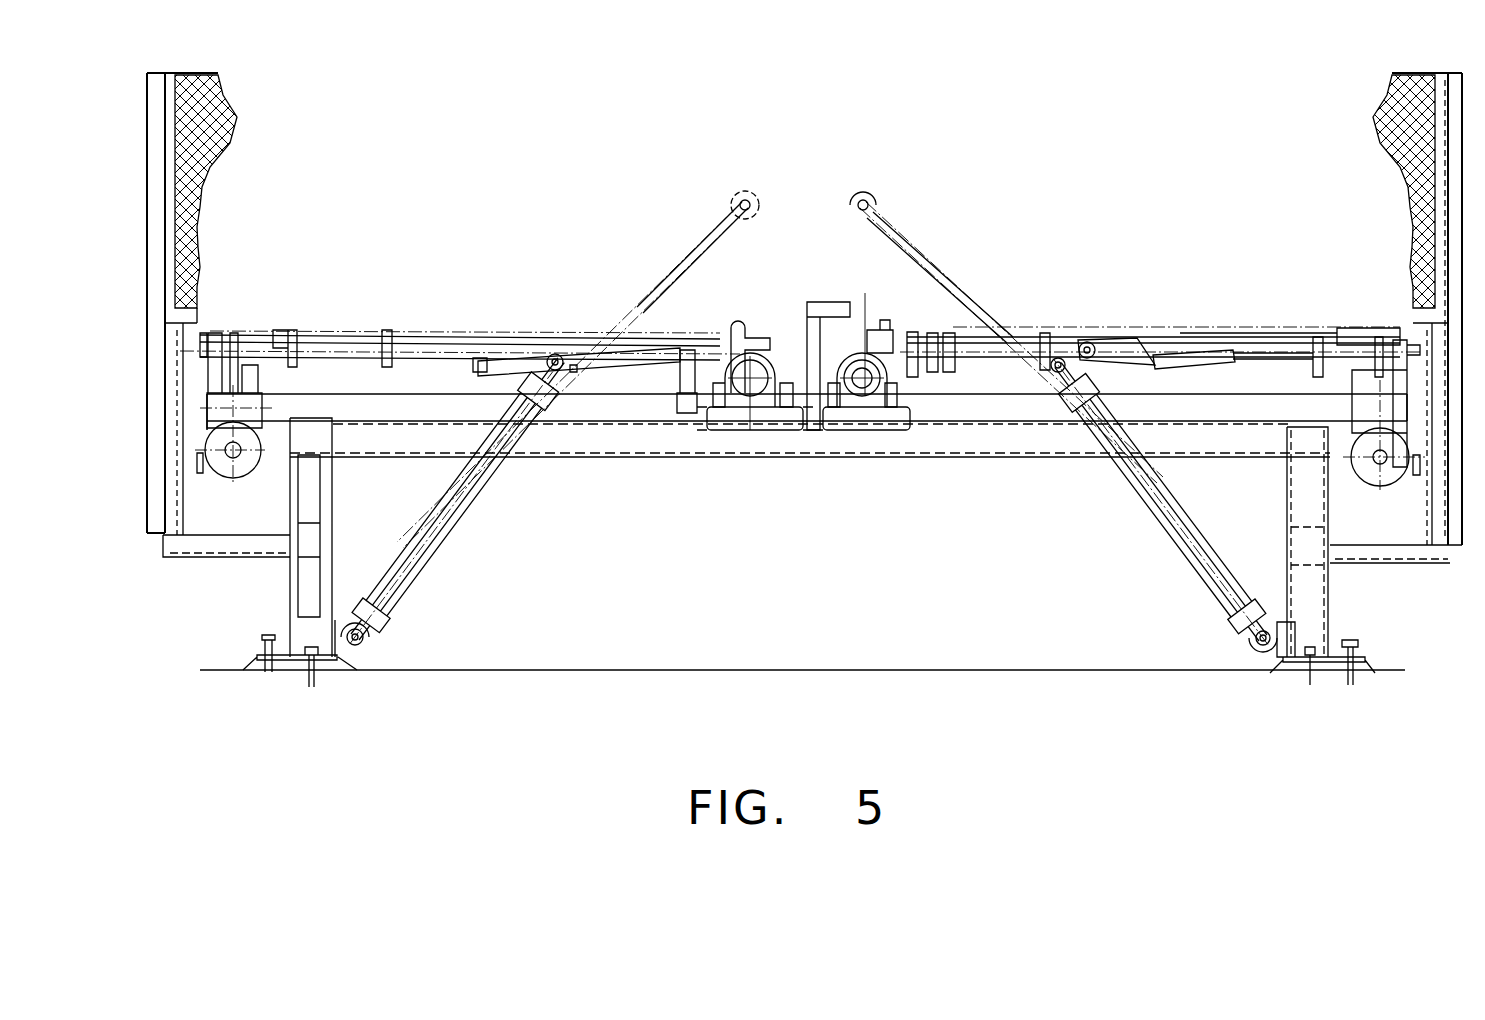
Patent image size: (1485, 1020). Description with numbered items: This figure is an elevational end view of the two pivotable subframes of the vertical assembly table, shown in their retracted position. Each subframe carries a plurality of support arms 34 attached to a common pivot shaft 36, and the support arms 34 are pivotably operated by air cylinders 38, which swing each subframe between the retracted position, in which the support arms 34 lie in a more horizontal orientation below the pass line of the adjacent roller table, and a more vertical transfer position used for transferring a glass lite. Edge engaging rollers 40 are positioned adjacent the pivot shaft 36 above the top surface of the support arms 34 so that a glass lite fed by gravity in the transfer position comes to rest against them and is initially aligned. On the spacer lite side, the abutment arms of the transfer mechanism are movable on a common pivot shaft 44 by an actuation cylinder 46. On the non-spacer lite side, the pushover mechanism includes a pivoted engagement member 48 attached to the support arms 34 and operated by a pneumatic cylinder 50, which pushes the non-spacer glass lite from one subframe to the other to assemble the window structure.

The support arms 34 is at (300, 337).
The pivot shaft 36 is at (748, 390).
The air cylinders 38 is at (433, 543).
The edge engaging rollers 40 is at (751, 342).
The pivot shaft 44 is at (742, 340).
The actuation cylinder 46 is at (650, 365).
The engagement member 48 is at (1115, 347).
The pneumatic cylinder 50 is at (1197, 375).